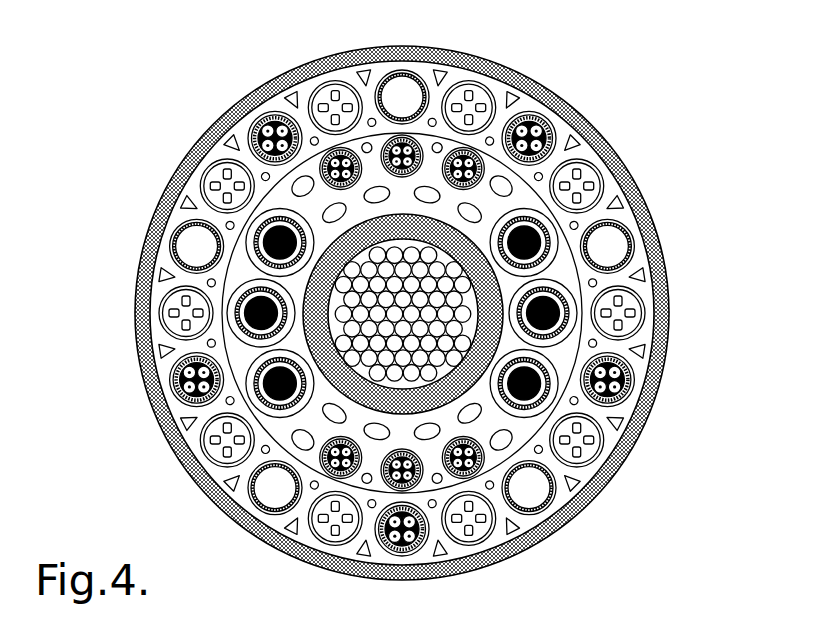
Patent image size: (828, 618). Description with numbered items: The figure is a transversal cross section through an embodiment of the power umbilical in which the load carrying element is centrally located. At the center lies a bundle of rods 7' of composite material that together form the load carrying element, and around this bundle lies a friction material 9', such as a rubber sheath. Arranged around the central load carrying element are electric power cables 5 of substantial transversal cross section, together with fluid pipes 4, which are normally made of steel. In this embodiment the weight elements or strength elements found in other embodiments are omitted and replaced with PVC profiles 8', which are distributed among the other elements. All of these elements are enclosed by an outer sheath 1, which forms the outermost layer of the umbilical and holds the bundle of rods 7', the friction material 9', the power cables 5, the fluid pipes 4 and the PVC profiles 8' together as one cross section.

The outer sheath 1 is at (624, 162).
The fluid pipes 4 is at (554, 490).
The electric power cables 5 is at (268, 390).
The rods 7' is at (604, 384).
The PVC profiles 8' is at (531, 76).
The friction material 9' is at (528, 314).